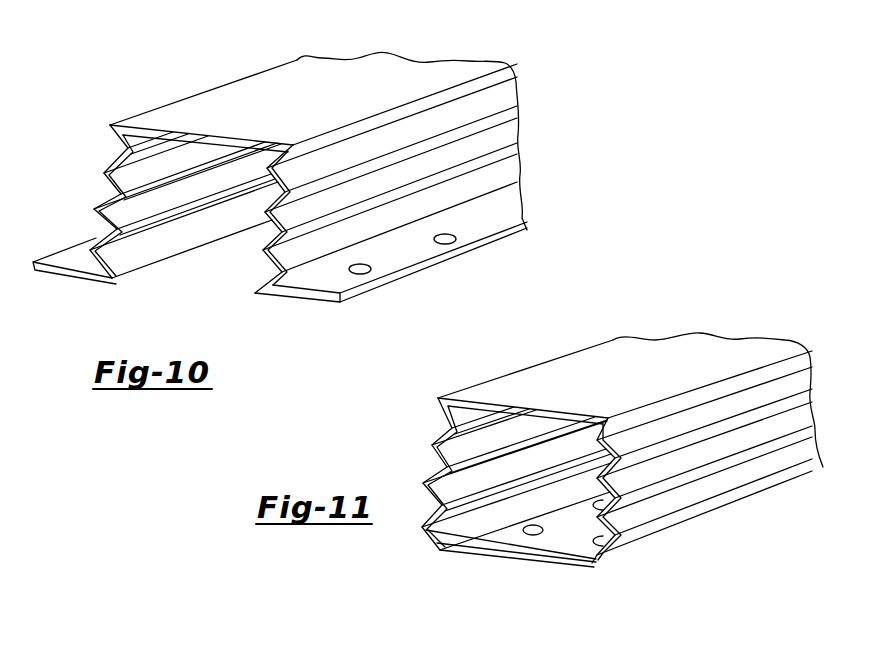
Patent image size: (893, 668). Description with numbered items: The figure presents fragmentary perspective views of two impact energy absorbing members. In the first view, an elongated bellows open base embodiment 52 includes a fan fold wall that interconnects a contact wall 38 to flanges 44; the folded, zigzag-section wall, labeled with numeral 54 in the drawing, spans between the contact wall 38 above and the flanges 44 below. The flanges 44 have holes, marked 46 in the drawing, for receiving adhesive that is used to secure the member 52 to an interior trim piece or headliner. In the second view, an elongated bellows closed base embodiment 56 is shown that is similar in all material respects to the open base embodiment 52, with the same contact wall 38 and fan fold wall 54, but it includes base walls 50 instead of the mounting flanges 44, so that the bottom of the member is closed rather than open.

In FIG. 10, the contact wall 38 is at (345, 78).
In FIG. 11, the contact wall 38 is at (678, 350).
In FIG. 10, the flanges 44 is at (85, 252).
In FIG. 10, the fastener hole 46 is at (448, 238).
In FIG. 11, the fastener hole 46 is at (533, 527).
In FIG. 10, the base walls 50 is at (540, 0).
In FIG. 11, the base walls 50 is at (568, 552).
In FIG. 10, the elongated bellows open base embodiment 52 is at (232, 106).
In FIG. 10, the corrugated side wall 54 is at (104, 178).
In FIG. 11, the corrugated side wall 54 is at (443, 434).
In FIG. 11, the elongated bellows closed base embodiment 56 is at (612, 368).